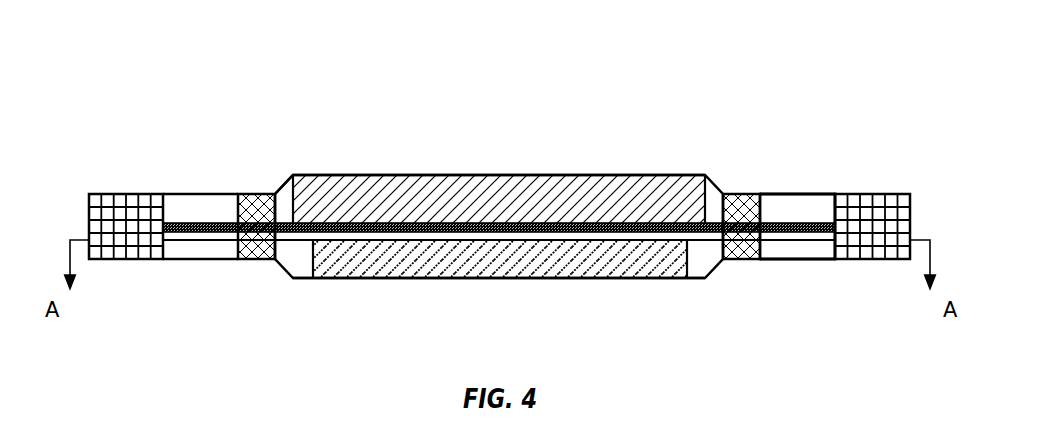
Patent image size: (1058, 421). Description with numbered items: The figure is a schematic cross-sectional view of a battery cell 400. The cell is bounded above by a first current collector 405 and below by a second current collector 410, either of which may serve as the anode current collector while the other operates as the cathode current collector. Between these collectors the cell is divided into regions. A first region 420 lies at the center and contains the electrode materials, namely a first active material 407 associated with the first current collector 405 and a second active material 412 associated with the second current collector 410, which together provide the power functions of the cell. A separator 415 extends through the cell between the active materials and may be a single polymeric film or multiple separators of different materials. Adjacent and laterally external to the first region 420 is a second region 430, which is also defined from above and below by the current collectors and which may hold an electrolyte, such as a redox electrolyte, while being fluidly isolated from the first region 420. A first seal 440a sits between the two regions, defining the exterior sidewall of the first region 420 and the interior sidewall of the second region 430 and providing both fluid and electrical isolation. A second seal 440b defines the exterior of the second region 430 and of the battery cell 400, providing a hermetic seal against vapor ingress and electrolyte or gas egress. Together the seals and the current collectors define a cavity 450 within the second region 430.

The battery cell 400 is at (272, 113).
The first current collector 405 is at (715, 184).
The first active material 407 is at (512, 175).
The second current collector 410 is at (570, 279).
The second active material 412 is at (425, 279).
The separator 415 is at (805, 233).
The first region 420 is at (343, 176).
The second region 430 is at (810, 193).
The first seal 440a is at (257, 260).
The second seal 440b is at (115, 260).
The cavity 450 is at (822, 260).